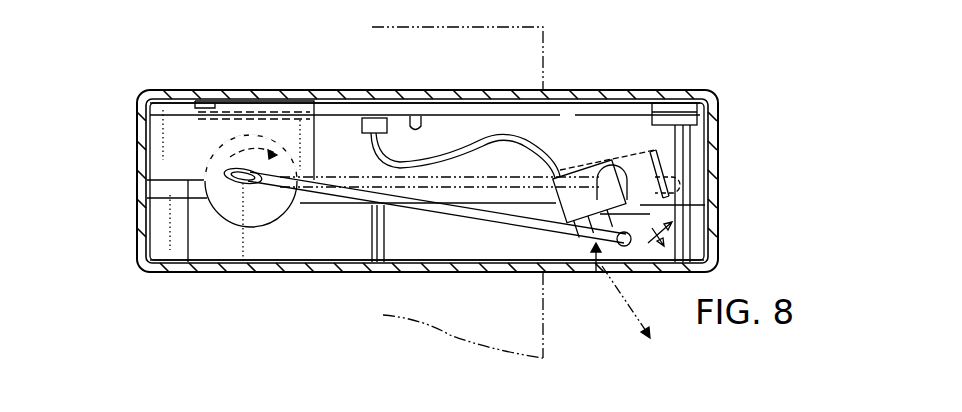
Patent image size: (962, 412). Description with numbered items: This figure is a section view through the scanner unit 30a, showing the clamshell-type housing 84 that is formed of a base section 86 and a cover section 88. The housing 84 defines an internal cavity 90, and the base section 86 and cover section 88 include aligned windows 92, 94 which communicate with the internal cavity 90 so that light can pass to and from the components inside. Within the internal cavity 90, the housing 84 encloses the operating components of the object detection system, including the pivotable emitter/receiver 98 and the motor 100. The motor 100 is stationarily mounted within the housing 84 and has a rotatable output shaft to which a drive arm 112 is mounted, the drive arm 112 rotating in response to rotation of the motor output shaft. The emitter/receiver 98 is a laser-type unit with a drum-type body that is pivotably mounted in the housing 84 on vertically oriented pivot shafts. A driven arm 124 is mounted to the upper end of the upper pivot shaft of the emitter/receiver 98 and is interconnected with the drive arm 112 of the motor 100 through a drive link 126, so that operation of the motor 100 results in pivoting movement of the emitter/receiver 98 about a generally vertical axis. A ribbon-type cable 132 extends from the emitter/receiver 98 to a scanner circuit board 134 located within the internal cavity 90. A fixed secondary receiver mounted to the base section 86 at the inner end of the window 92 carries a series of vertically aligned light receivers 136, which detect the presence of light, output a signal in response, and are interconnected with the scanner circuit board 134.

The scanner unit 30a is at (83, 276).
The housing 84 is at (124, 158).
The base section 86 is at (238, 90).
The cover section 88 is at (228, 274).
The internal cavity 90 is at (407, 245).
The window 92 is at (714, 147).
The window 94 is at (597, 274).
The pivotable emitter/receiver 98 is at (696, 146).
The motor 100 is at (276, 224).
The drive arm 112 is at (237, 192).
The driven arm 124 is at (665, 209).
The drive link 126 is at (441, 240).
The ribbon-type cable 132 is at (503, 134).
The scanner circuit board 134 is at (412, 120).
The light receivers 136 is at (664, 161).